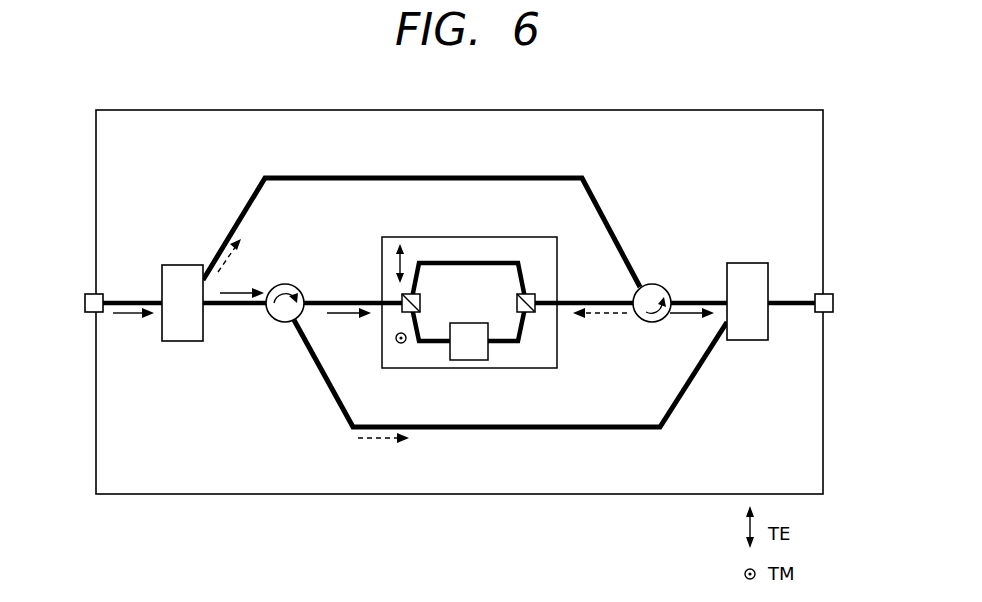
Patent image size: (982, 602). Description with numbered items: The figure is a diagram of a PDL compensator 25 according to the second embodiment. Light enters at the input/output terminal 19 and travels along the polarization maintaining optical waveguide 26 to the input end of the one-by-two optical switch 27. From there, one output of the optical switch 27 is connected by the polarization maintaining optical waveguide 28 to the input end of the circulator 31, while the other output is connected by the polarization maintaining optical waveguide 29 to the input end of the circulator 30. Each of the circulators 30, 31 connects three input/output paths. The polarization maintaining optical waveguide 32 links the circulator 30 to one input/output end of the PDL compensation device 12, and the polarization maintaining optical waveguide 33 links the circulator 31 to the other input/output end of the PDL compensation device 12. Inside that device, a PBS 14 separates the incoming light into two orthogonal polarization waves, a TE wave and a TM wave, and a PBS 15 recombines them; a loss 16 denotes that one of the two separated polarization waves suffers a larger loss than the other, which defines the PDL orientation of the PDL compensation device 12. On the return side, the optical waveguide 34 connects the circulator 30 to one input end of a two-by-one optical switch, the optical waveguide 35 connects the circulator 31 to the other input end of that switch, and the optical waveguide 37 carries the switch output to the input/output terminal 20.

The PDL compensation device 12 is at (557, 354).
The PBS 14 is at (420, 297).
The PBS 15 is at (517, 300).
The loss 16 is at (462, 360).
The input/output terminal 19 is at (85, 294).
The input/output terminal 20 is at (835, 295).
The PDL compensator 25 is at (180, 496).
The polarization maintaining optical waveguide 26 is at (126, 300).
The 1×2 optical switch 27 is at (186, 265).
The polarization maintaining optical waveguide 28 is at (521, 176).
The polarization maintaining optical waveguide 29 is at (220, 308).
The circulator 30 is at (284, 322).
The circulator 31 is at (658, 285).
The polarization maintaining optical waveguide 32 is at (334, 300).
The polarization maintaining optical waveguide 33 is at (589, 300).
The optical waveguide 34 is at (478, 430).
The optical waveguide 35 is at (698, 300).
The optical waveguide 37 is at (790, 308).